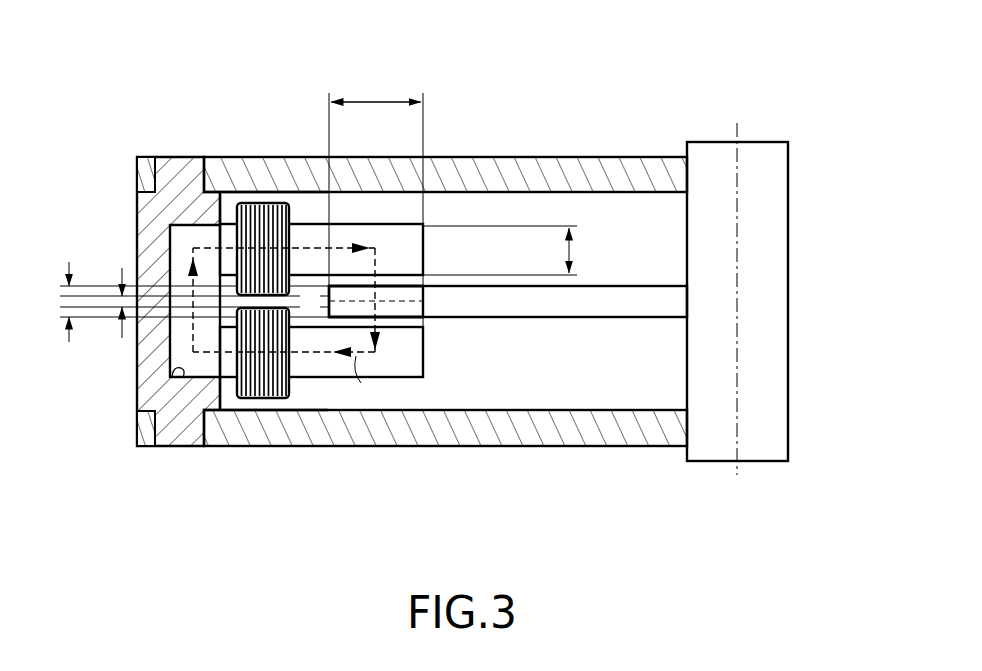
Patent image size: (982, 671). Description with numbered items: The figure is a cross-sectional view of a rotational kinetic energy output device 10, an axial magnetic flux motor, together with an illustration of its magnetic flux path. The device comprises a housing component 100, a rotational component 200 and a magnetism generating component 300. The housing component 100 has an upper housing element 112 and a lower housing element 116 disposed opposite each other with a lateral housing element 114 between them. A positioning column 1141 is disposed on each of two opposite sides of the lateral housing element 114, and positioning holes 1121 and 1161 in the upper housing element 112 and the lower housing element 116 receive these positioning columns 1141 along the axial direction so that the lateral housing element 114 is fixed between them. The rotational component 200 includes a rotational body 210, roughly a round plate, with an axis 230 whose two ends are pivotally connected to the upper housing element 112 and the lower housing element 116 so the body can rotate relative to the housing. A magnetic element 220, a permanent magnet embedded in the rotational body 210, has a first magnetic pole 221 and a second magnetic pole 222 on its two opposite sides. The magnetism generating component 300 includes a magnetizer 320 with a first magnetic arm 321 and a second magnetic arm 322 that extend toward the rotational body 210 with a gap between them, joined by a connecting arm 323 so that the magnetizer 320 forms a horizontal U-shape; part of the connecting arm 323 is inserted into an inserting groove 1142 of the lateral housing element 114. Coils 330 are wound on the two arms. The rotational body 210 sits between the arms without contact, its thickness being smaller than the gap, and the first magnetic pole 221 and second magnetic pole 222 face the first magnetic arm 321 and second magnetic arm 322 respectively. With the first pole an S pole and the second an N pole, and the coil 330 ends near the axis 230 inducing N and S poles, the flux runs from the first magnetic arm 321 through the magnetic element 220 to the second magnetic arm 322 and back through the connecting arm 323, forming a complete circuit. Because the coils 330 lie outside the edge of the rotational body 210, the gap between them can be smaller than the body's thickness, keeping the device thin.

The rotational kinetic energy output device 10 is at (113, 33).
The housing component 100 is at (365, 300).
The upper housing element 112 is at (437, 139).
The positioning hole 1121 is at (203, 165).
The lateral housing element 114 is at (132, 301).
The positioning column 1141 is at (169, 160).
The inserting groove 1142 is at (173, 372).
The lower housing element 116 is at (437, 461).
The positioning hole 1161 is at (203, 444).
The rotational component 200 is at (603, 299).
The rotational body 210 is at (636, 291).
The magnetic element 220 is at (413, 300).
The first magnetic pole 221 is at (399, 287).
The second magnetic pole 222 is at (398, 316).
The axis 230 is at (779, 303).
The magnetism generating component 300 is at (386, 304).
The magnetizer 320 is at (292, 301).
The first magnetic arm 321 is at (401, 233).
The second magnetic arm 322 is at (401, 372).
The connecting arm 323 is at (162, 226).
The coil 330 is at (265, 203).